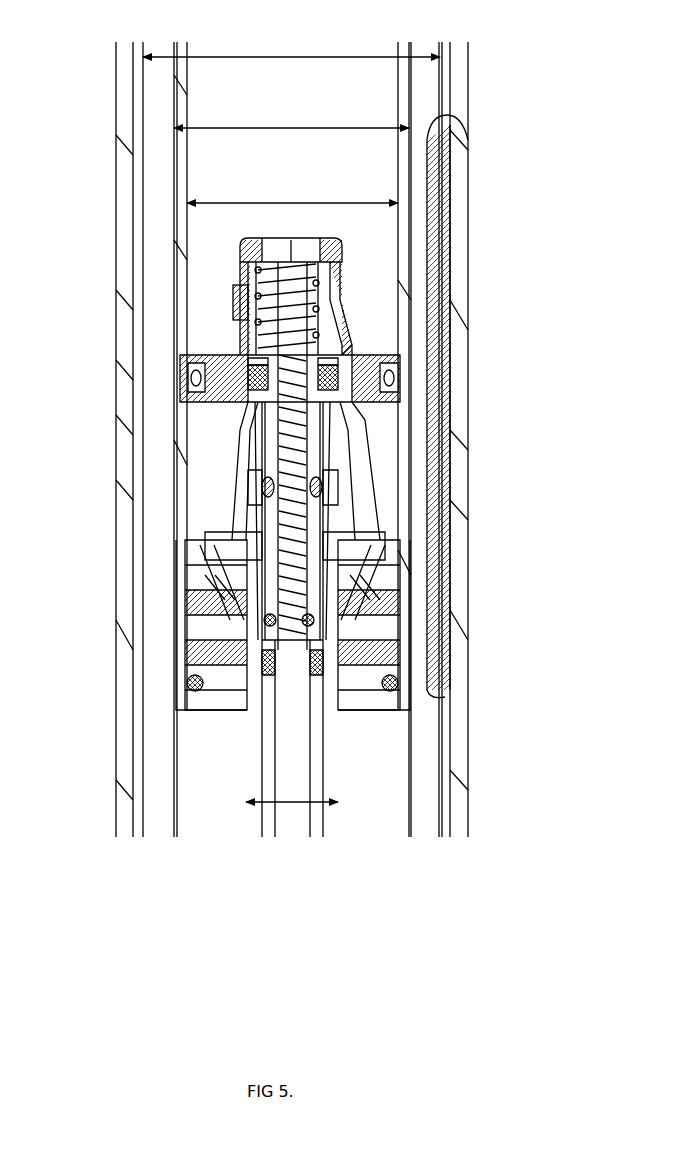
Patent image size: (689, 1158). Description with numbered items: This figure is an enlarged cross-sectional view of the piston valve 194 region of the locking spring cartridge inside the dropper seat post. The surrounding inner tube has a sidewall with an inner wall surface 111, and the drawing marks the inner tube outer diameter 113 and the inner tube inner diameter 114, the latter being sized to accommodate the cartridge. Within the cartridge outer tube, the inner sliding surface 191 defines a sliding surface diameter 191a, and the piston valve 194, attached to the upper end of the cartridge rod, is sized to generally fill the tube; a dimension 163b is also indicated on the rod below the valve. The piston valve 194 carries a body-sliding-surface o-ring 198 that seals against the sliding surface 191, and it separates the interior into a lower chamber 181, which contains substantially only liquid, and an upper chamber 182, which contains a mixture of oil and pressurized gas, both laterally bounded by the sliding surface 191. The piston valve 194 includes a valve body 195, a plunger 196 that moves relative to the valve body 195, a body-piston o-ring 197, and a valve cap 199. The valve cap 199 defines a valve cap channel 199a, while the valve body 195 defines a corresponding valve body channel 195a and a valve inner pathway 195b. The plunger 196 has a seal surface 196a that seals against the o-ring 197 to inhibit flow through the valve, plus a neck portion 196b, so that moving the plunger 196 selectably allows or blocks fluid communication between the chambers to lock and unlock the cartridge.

The inner wall surface 111 is at (398, 260).
The inner tube outer diameter 113 is at (187, 57).
The inner tube inner diameter 114 is at (218, 128).
The stem bore diameter 163b is at (290, 802).
The lower chamber 181 is at (212, 507).
The upper chamber 182 is at (205, 302).
The inner sliding surface 191 is at (398, 176).
The sliding surface diameter 191a is at (228, 203).
The piston valve 194 is at (378, 310).
The valve body 195 is at (355, 350).
The valve body channel 195a is at (248, 417).
The valve inner pathway 195b is at (273, 433).
The plunger 196 is at (293, 427).
The seal surface 196a is at (258, 368).
The neck portion 196b is at (307, 492).
The body-piston o-ring 197 is at (338, 377).
The body-sliding-surface o-ring 198 is at (190, 375).
The valve cap 199 is at (242, 243).
The valve cap channel 199a is at (242, 278).